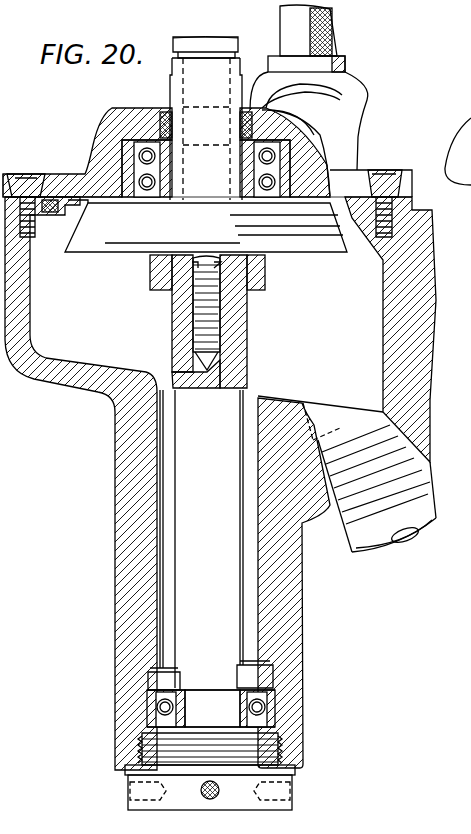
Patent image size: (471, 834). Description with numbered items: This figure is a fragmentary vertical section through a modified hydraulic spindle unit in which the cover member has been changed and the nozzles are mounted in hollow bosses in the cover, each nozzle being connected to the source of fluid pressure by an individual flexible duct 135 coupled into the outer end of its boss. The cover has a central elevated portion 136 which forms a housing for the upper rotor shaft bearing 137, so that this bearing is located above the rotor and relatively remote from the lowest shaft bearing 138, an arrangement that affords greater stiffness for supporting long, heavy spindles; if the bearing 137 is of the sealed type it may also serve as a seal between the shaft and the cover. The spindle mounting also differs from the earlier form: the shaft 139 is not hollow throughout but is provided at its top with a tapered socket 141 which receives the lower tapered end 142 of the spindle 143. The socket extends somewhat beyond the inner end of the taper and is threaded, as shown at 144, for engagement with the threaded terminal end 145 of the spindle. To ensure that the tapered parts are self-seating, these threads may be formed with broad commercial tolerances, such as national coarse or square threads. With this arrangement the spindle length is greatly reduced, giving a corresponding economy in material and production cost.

The flexible duct 135 is at (322, 31).
The central elevated portion 136 is at (122, 120).
The upper rotor shaft bearing 137 is at (146, 154).
The lowest shaft bearing 138 is at (160, 707).
The shaft 139 is at (248, 327).
The tapered socket 141 is at (193, 268).
The lower tapered end 142 is at (236, 64).
The spindle 143 is at (208, 38).
The threaded portion of socket 144 is at (244, 356).
The threaded terminal end 145 is at (202, 320).